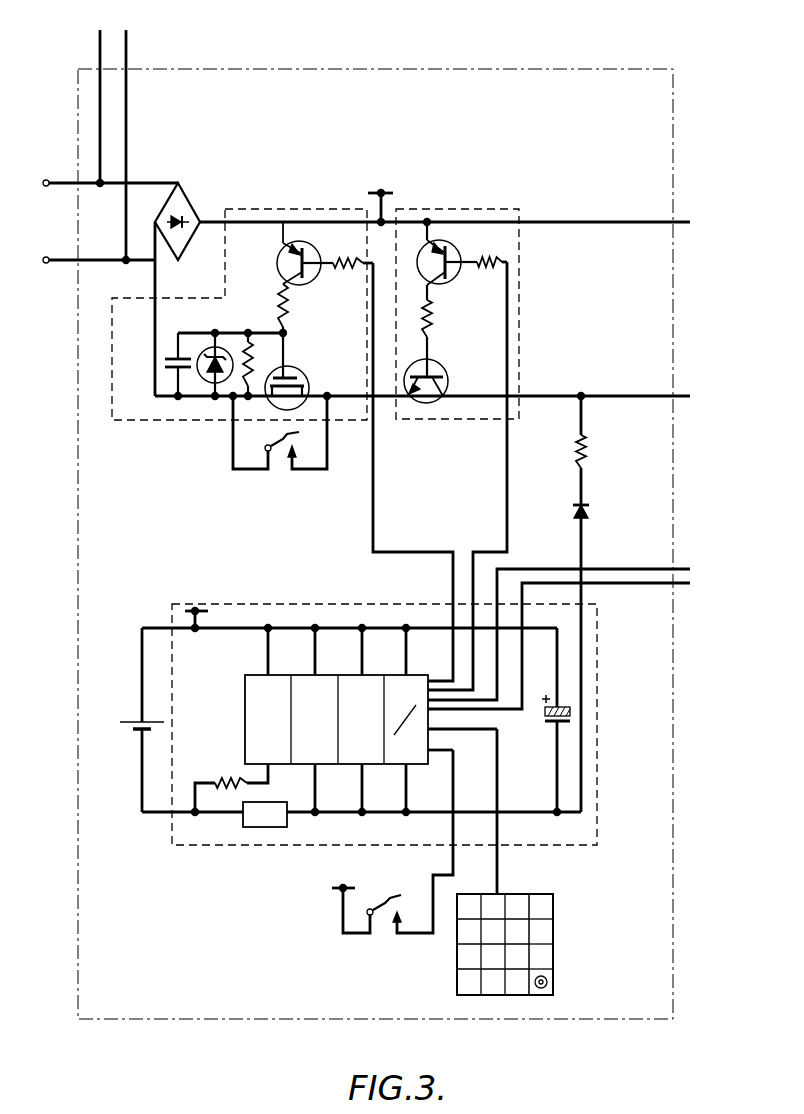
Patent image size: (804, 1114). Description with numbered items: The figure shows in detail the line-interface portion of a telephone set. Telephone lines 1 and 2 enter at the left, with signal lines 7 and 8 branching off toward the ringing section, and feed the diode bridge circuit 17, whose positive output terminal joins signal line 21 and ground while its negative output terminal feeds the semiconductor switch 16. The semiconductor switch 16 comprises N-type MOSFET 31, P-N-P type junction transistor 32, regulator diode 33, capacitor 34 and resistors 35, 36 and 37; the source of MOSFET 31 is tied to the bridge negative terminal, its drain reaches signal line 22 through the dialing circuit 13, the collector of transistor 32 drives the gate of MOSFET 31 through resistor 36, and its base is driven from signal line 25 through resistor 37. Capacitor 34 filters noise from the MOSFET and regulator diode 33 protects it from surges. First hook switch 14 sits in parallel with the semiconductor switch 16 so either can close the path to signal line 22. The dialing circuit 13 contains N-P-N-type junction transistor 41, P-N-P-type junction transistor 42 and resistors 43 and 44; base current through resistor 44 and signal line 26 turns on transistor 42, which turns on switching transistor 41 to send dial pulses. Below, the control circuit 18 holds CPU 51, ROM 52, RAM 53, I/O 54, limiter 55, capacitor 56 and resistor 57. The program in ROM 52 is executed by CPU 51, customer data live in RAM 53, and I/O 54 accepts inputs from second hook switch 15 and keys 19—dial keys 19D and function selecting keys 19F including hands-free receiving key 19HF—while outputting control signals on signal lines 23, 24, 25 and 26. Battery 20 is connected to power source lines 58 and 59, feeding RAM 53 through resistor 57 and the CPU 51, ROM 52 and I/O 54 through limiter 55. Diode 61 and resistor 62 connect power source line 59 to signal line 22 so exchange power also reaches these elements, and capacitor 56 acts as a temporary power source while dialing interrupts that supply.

The telephone line 1 is at (46, 179).
The telephone line 2 is at (46, 257).
The signal line 7 is at (100, 36).
The signal line 8 is at (128, 36).
The dialing circuit 13 is at (428, 209).
The first hook switch 14 is at (280, 463).
The second hook switch 15 is at (381, 928).
The semiconductor switch 16 is at (275, 209).
The diode bridge circuit 17 is at (184, 200).
The control circuit 18 is at (232, 846).
The keys 19 is at (514, 888).
The dial keys 19D is at (493, 998).
The function selecting keys 19F is at (558, 958).
The hands-free receiving key 19HF is at (541, 998).
The battery 20 is at (135, 732).
The signal line 21 is at (680, 221).
The signal line 22 is at (680, 395).
The signal line 23 is at (570, 630).
The signal line 24 is at (569, 643).
The signal line 25 is at (374, 508).
The signal line 26 is at (508, 508).
The N-type MOSFET 31 is at (300, 373).
The P-N-P type junction transistor 32 is at (318, 250).
The regulator diode 33 is at (213, 350).
The capacitor 34 is at (170, 356).
The resistor 35 is at (251, 345).
The resistor 36 is at (290, 326).
The resistor 37 is at (345, 270).
The N-P-N-type junction transistor 41 is at (445, 373).
The P-N-P-type junction transistor 42 is at (458, 250).
The resistor 43 is at (432, 325).
The resistor 44 is at (486, 270).
The CPU 51 is at (303, 672).
The ROM 52 is at (350, 672).
The RAM 53 is at (258, 672).
The I/O 54 is at (393, 672).
The limiter 55 is at (268, 828).
The capacitor 56 is at (545, 716).
The resistor 57 is at (226, 782).
The power source line 58 is at (380, 628).
The power source line 59 is at (543, 814).
The diode 61 is at (590, 506).
The resistor 62 is at (590, 452).